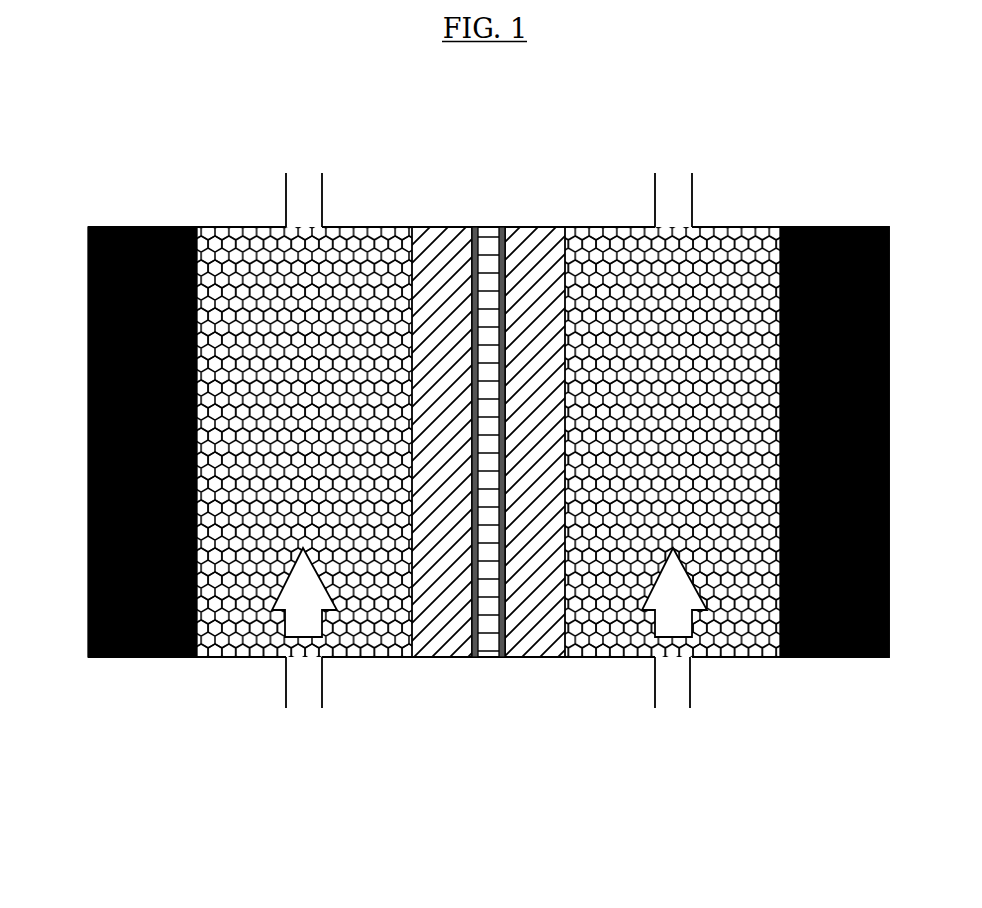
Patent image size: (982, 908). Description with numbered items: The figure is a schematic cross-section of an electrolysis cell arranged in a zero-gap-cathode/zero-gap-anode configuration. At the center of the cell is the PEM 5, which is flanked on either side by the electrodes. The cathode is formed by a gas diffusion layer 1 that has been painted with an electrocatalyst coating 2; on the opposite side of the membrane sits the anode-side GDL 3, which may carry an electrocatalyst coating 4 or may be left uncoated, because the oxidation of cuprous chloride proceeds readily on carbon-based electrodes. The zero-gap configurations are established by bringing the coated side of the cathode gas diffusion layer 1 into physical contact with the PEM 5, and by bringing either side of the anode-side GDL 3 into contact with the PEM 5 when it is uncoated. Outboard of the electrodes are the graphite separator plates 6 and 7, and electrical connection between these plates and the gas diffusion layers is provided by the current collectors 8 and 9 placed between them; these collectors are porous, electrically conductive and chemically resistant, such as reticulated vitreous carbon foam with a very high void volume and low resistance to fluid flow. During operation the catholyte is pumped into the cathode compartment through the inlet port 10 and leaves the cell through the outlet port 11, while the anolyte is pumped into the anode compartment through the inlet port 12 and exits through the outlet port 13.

The gas diffusion layer 1 is at (455, 232).
The electrocatalyst coating 2 is at (455, 627).
The anode-side GDL 3 is at (538, 650).
The electrocatalyst coating 4 is at (518, 228).
The PEM 5 is at (490, 650).
The graphite separator plate 6 is at (140, 655).
The graphite separator plate 7 is at (833, 655).
The current collector 8 is at (343, 243).
The current collector 9 is at (733, 243).
The inlet port 10 is at (307, 702).
The outlet port 11 is at (303, 180).
The inlet port 12 is at (677, 703).
The outlet port 13 is at (672, 185).